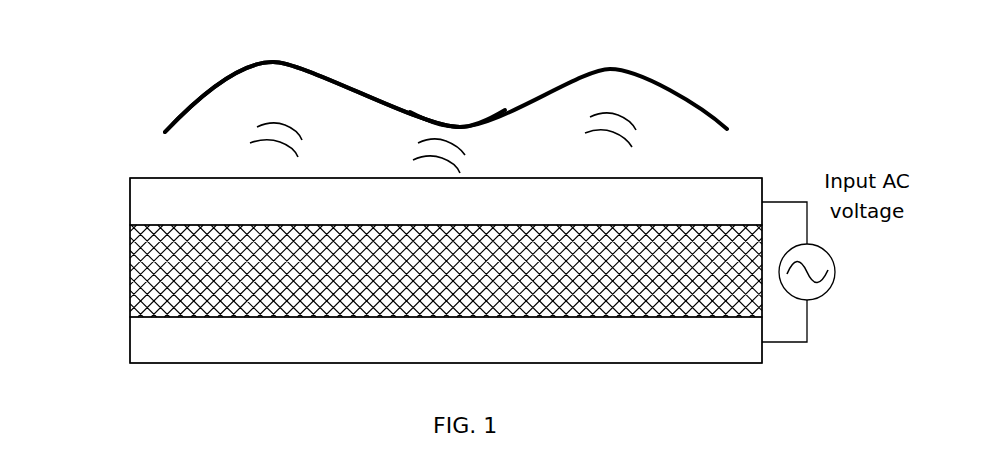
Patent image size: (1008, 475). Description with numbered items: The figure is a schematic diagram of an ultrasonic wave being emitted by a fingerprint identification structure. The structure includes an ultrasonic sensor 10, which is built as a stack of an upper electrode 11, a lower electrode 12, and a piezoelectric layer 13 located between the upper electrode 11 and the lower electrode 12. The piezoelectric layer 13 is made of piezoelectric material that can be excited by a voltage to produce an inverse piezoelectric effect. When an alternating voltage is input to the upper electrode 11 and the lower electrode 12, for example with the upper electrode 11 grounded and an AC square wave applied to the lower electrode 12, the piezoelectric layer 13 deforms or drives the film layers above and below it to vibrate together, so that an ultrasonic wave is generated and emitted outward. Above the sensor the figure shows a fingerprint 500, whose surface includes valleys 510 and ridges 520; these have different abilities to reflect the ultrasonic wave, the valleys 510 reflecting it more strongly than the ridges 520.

The ultrasonic sensor 10 is at (70, 195).
The upper electrode 11 is at (153, 207).
The lower electrode 12 is at (153, 342).
The piezoelectric layer 13 is at (153, 273).
The fingerprint 500 is at (692, 100).
The valleys 510 is at (283, 93).
The ridges 520 is at (443, 128).